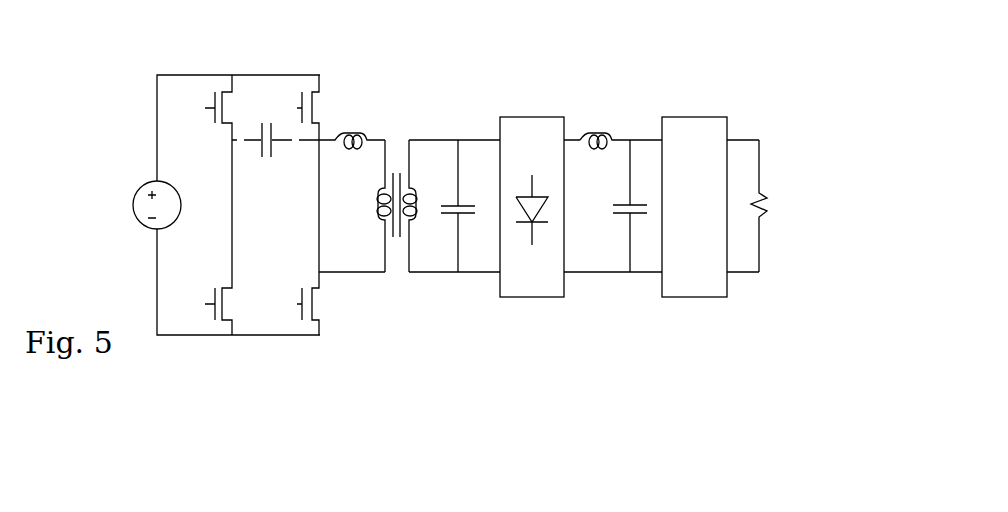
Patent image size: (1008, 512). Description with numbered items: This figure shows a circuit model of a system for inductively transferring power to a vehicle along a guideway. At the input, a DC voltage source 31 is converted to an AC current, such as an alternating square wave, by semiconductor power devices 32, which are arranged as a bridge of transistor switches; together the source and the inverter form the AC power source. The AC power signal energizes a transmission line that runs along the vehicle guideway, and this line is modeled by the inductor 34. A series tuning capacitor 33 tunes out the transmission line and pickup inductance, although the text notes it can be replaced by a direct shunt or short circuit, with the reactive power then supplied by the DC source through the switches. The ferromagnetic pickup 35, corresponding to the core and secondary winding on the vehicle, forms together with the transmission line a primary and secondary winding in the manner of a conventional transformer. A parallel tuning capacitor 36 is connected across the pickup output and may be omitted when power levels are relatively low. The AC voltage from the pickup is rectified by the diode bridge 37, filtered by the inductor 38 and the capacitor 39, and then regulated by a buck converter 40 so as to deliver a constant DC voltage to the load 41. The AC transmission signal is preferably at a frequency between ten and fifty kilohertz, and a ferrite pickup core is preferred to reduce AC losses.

The DC voltage source 31 is at (135, 193).
The semiconductor power devices 32 is at (276, 221).
The capacitor 33 is at (259, 112).
The inductor 34 is at (353, 135).
The ferromagnetic pickup 35 is at (397, 152).
The parallel tuning capacitor 36 is at (468, 137).
The diode bridge 37 is at (528, 128).
The inductor 38 is at (592, 128).
The capacitor 39 is at (631, 139).
The buck converter 40 is at (680, 115).
The load 41 is at (757, 165).